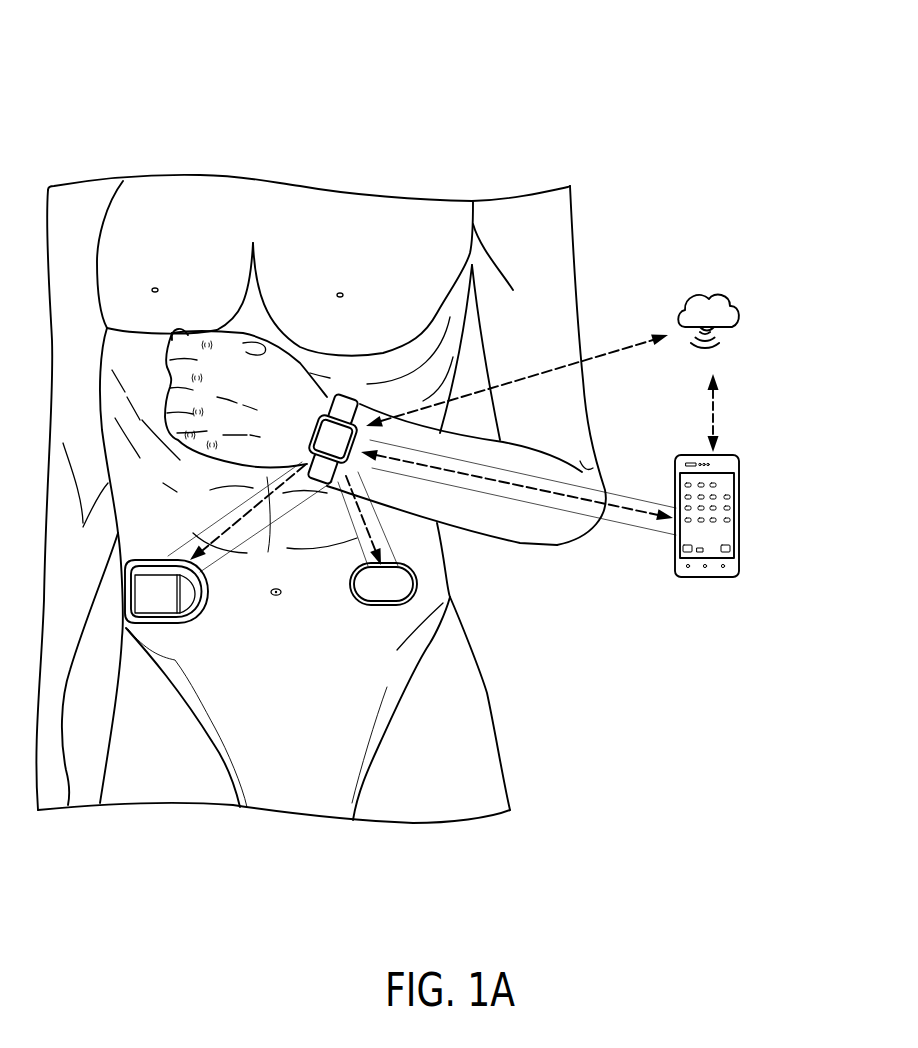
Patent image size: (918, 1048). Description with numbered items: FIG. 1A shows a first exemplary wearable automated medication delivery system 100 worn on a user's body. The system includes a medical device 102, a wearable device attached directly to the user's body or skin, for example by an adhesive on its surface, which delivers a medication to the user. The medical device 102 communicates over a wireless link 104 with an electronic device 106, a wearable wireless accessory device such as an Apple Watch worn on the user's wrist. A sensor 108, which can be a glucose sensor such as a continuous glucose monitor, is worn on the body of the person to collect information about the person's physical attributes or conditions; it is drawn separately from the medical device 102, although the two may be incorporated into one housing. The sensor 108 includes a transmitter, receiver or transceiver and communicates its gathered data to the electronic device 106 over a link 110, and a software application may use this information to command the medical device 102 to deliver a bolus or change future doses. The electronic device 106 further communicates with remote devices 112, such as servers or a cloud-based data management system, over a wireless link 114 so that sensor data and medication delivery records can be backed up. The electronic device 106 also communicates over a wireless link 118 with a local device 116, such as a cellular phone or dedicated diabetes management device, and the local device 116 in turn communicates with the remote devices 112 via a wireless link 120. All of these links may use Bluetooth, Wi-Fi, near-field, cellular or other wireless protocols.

The wearable automated medication delivery system 100 is at (88, 82).
The medical device 102 is at (176, 626).
The wireless link 104 is at (294, 488).
The electronic device 106 is at (336, 396).
The sensor 108 is at (375, 608).
The link 110 is at (352, 568).
The remote devices 112 is at (725, 297).
The wireless link 114 is at (633, 344).
The local device 116 is at (739, 514).
The wireless link 118 is at (563, 500).
The wireless link 120 is at (717, 408).